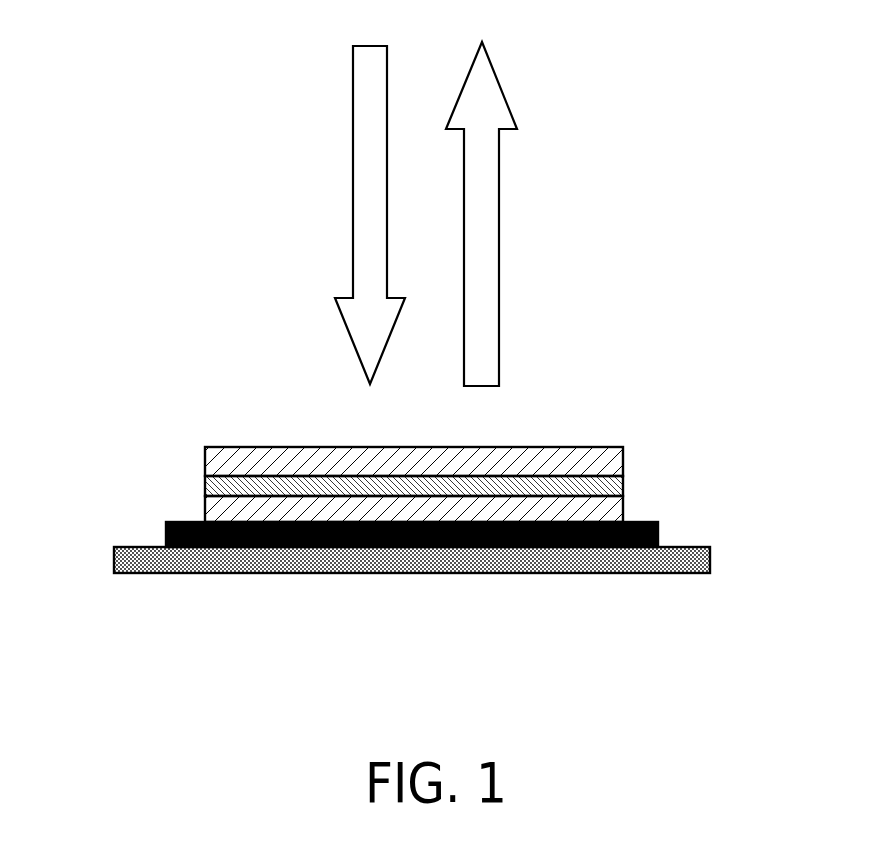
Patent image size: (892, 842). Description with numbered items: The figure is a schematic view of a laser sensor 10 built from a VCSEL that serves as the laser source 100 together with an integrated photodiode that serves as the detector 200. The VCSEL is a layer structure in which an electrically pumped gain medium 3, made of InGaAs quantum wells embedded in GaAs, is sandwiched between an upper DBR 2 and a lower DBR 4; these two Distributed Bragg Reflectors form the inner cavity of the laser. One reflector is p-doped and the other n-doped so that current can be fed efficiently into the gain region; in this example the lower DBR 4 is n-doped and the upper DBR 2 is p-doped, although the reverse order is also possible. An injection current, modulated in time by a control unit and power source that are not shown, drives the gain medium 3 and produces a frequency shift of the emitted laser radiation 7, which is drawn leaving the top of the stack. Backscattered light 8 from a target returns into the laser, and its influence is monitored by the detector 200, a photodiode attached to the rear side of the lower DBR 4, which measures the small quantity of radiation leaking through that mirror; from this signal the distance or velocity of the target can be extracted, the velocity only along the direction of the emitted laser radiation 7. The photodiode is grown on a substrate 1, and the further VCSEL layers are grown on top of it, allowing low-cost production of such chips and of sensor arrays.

The substrate 1 is at (638, 562).
The upper DBR 2 is at (615, 463).
The gain medium 3 is at (220, 484).
The lower DBR 4 is at (615, 510).
The emitted laser radiation 7 is at (483, 197).
The backscattered light 8 is at (363, 197).
The laser sensor 10 is at (150, 297).
The laser source 100 is at (473, 481).
The detector 200 is at (166, 535).